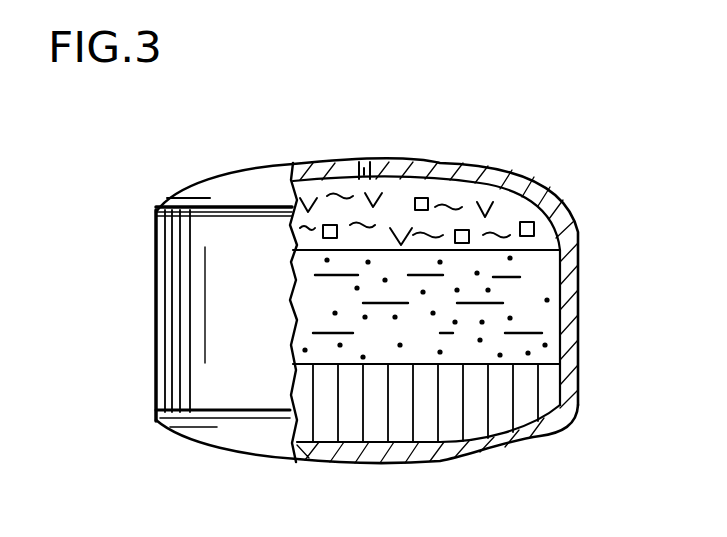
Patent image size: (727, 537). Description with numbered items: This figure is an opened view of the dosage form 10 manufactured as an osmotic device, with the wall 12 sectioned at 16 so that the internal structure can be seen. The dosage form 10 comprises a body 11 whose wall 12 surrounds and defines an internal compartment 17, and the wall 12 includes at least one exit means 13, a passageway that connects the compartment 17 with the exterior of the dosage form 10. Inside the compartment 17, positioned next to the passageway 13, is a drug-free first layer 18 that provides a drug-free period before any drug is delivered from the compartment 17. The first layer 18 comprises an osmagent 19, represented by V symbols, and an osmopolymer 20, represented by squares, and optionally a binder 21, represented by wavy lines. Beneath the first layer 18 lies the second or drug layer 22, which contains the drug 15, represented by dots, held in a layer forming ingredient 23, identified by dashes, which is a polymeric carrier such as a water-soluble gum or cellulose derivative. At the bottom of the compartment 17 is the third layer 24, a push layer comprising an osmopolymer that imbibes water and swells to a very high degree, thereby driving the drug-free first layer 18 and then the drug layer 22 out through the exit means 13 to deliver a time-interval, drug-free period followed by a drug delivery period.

The dosage form 10 is at (600, 175).
The body 11 is at (583, 218).
The wall 12 is at (580, 278).
The exit means 13 is at (372, 162).
The drug 15 is at (310, 298).
The opened view section 16 is at (310, 434).
The internal compartment 17 is at (545, 316).
The first layer 18 is at (507, 212).
The osmagent 19 is at (470, 192).
The osmopolymer 20 is at (528, 233).
The binder 21 is at (350, 195).
The drug layer 22 is at (300, 320).
The layer forming ingredient 23 is at (543, 335).
The third layer 24 is at (537, 384).